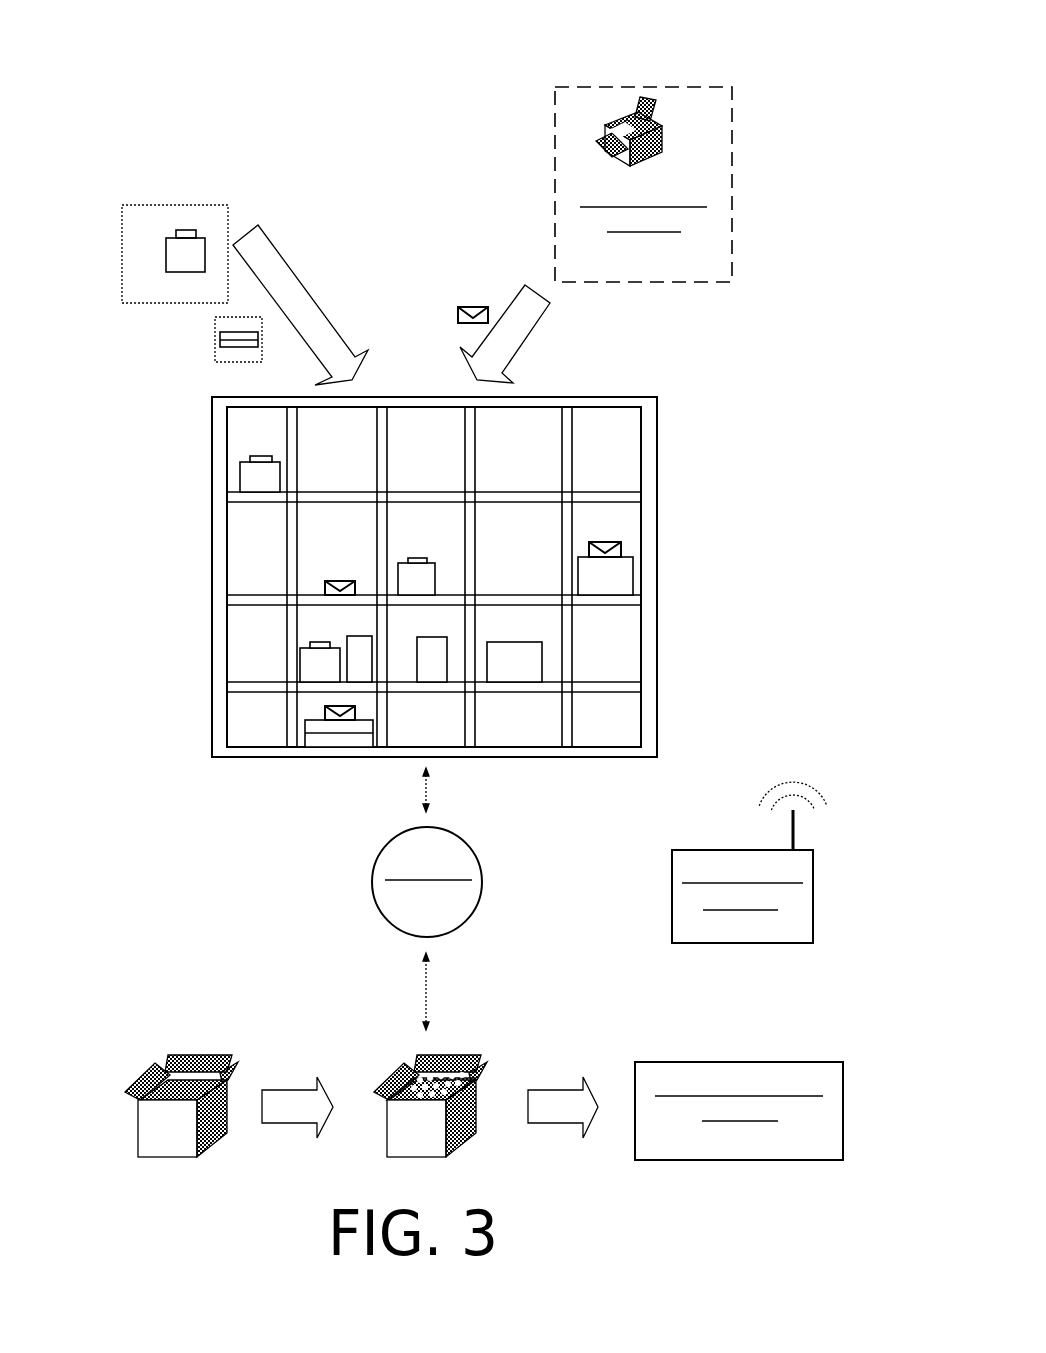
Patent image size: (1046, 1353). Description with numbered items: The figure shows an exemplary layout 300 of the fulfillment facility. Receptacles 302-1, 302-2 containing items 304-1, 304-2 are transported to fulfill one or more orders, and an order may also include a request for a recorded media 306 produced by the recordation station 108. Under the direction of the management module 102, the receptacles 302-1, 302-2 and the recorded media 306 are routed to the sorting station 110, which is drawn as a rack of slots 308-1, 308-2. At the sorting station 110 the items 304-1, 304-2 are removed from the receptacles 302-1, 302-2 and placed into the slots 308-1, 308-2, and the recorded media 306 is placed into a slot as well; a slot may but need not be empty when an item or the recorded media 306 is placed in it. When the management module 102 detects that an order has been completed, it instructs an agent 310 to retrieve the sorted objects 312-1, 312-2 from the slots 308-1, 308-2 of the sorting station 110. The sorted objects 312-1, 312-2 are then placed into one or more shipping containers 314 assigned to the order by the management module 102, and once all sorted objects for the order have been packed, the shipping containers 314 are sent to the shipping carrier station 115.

The fulfillment facility layout 300 is at (138, 35).
The receptacle 302-1 is at (162, 207).
The receptacle 302-2 is at (218, 362).
The item 304-1 is at (205, 240).
The item 304-2 is at (220, 338).
The recorded media 306 is at (477, 286).
The recordation station 108 is at (628, 256).
The sorting station 110 is at (613, 397).
The slot 308-1 is at (305, 712).
The slot 308-2 is at (636, 545).
The sorted objects 312-1 is at (320, 733).
The sorted objects 312-2 is at (623, 585).
The agent 310 is at (447, 905).
The management module 102 is at (758, 934).
The shipping container 314 is at (404, 1050).
The shipping carrier station 115 is at (722, 1146).